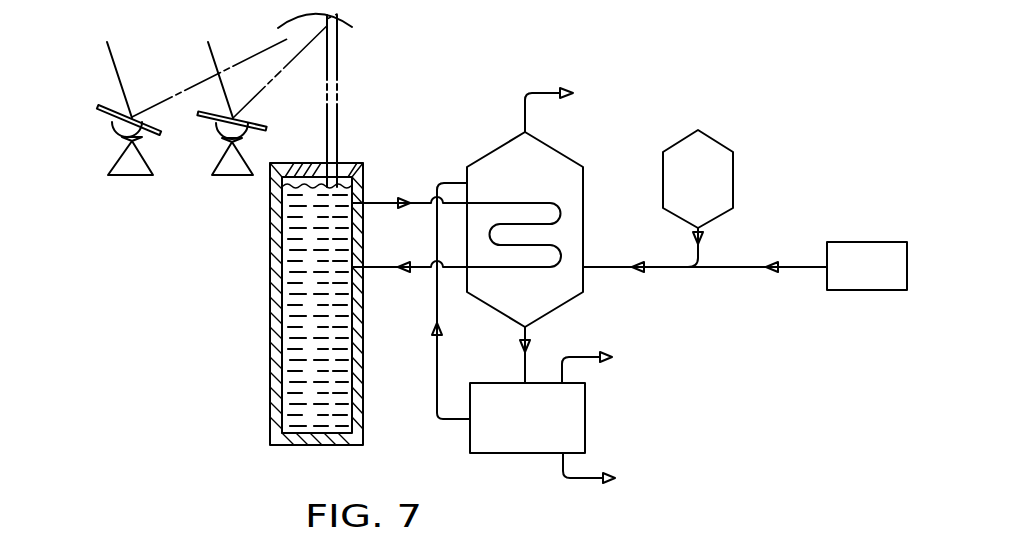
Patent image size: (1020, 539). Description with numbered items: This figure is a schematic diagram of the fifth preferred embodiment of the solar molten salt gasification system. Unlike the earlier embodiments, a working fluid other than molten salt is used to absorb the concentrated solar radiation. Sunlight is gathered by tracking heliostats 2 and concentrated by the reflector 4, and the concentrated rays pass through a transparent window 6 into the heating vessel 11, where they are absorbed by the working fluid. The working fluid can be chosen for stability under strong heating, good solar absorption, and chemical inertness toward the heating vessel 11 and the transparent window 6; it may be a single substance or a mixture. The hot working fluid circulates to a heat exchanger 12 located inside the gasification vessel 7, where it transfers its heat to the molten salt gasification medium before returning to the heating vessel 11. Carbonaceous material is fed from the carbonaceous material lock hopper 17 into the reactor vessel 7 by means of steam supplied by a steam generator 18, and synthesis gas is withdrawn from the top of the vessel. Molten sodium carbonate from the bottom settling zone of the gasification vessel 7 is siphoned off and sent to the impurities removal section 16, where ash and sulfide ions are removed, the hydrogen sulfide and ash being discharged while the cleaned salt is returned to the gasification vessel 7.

The tracking heliostat 2 is at (120, 146).
The reflector 4 is at (337, 13).
The transparent window 6 is at (337, 160).
The gasification vessel 7 is at (585, 234).
The heating vessel 11 is at (270, 216).
The heat exchanger 12 is at (563, 213).
The impurities removal section 16 is at (492, 455).
The carbonaceous material lock hopper 17 is at (717, 140).
The steam generator 18 is at (875, 290).